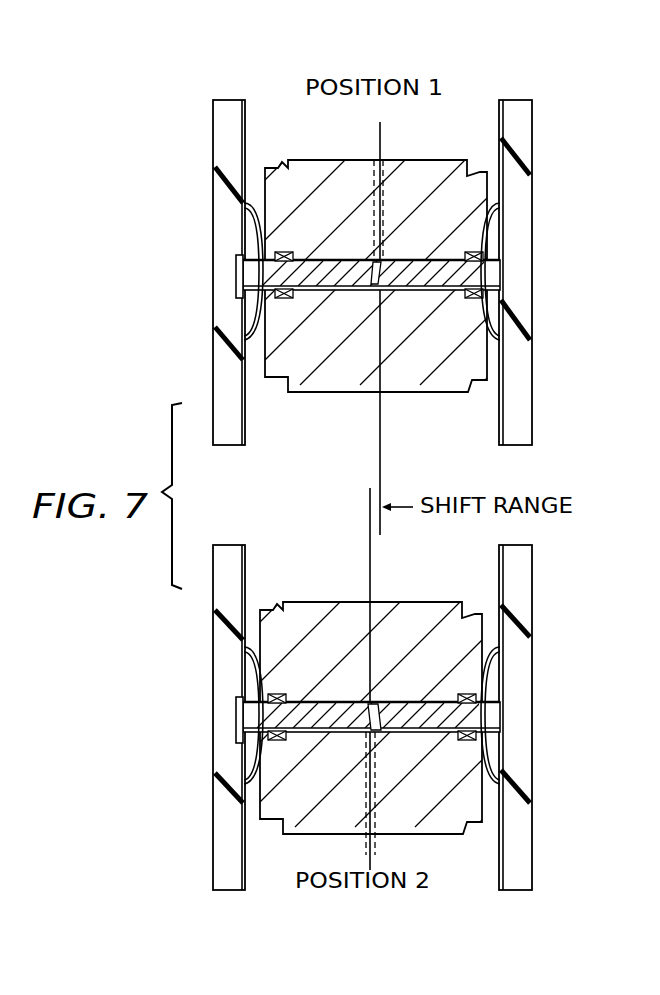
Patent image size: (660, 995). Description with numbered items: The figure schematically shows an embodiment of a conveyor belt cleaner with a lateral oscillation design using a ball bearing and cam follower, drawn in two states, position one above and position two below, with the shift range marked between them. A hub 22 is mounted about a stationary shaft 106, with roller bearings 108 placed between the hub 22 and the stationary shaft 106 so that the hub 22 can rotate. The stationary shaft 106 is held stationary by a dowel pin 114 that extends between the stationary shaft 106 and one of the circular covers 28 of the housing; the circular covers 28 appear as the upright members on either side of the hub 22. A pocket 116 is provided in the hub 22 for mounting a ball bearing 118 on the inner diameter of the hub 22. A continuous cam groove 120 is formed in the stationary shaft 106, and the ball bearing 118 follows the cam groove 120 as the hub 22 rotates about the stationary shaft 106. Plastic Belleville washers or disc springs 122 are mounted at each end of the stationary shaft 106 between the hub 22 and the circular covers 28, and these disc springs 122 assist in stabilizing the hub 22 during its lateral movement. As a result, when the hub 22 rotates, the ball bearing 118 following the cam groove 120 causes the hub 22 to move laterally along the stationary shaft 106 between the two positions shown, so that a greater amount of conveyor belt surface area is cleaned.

The circular cover 28 is at (225, 135).
The hub 22 is at (313, 158).
The pocket 116 is at (384, 158).
The ball bearing 118 is at (376, 262).
The cam groove 120 is at (382, 722).
The roller bearing 108 is at (275, 256).
The dowel pin 114 is at (237, 268).
The stationary shaft 106 is at (242, 287).
The disc spring 122 is at (496, 312).